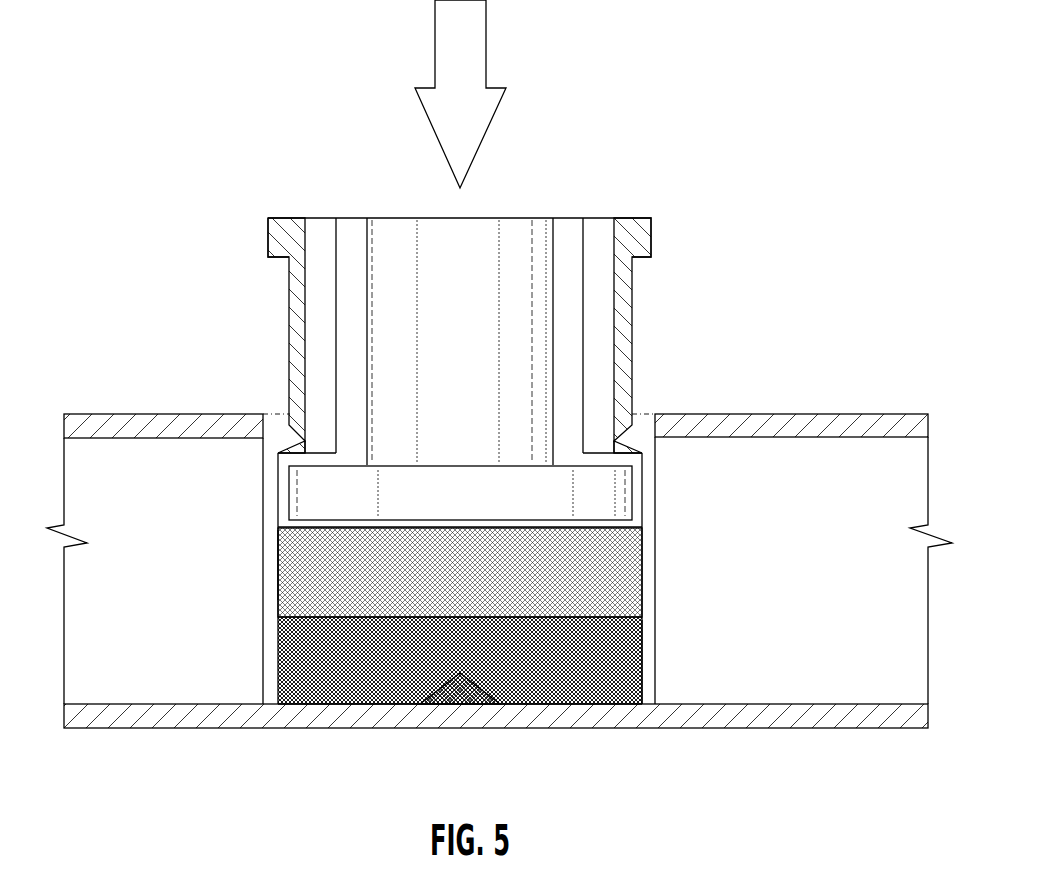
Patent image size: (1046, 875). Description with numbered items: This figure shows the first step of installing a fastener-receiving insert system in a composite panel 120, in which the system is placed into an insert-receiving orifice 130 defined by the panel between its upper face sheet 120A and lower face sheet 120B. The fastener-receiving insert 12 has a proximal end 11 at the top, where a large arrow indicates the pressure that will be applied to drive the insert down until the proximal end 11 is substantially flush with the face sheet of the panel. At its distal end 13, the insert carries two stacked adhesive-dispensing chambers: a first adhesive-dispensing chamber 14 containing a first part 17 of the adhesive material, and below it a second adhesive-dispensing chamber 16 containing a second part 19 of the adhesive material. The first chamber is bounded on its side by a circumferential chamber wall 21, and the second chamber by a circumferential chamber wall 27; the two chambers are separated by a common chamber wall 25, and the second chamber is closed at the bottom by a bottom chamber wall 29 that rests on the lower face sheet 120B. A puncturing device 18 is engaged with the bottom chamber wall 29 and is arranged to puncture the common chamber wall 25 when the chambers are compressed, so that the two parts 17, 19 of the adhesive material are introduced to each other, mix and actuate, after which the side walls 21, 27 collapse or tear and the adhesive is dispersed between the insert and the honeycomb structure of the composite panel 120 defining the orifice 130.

The proximal end 11 is at (643, 219).
The fastener-receiving insert 12 is at (652, 320).
The distal end 13 is at (643, 482).
The insert-receiving orifice 130 is at (645, 433).
The first adhesive-dispensing chamber 14 is at (647, 583).
The second adhesive-dispensing chamber 16 is at (642, 680).
The first part of the adhesive material 17 is at (298, 588).
The puncturing device 18 is at (478, 695).
The second part of the adhesive material 19 is at (335, 668).
The chamber wall 21 is at (278, 557).
The common chamber wall 25 is at (570, 618).
The chamber wall 27 is at (410, 640).
The bottom chamber wall 29 is at (618, 705).
The composite panel 120 is at (889, 382).
The upper face sheet 120A is at (765, 415).
The lower face sheet 120B is at (757, 728).